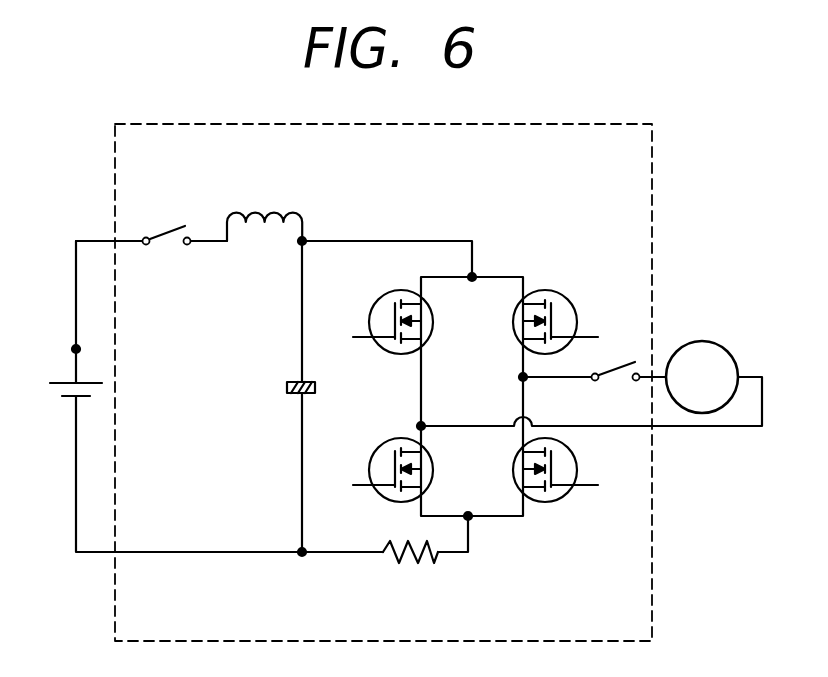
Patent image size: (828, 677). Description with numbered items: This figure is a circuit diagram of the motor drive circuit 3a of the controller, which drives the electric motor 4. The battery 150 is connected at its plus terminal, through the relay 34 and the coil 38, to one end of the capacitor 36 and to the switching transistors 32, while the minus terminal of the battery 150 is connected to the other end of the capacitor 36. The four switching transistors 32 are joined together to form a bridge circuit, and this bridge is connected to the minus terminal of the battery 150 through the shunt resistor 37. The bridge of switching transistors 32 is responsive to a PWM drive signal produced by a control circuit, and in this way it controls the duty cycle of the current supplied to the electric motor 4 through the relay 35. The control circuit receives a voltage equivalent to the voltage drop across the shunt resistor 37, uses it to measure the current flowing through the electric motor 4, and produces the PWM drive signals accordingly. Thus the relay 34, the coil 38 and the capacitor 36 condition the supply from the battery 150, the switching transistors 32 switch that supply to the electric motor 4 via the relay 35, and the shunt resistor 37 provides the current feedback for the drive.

The motor drive circuit 3a is at (577, 124).
The relay 34 is at (166, 232).
The coil 38 is at (293, 212).
The capacitor 36 is at (292, 395).
The switching transistors 32 is at (549, 290).
The relay 35 is at (614, 364).
The electric motor 4 is at (717, 341).
The shunt resistor 37 is at (430, 560).
The battery 150 is at (60, 388).